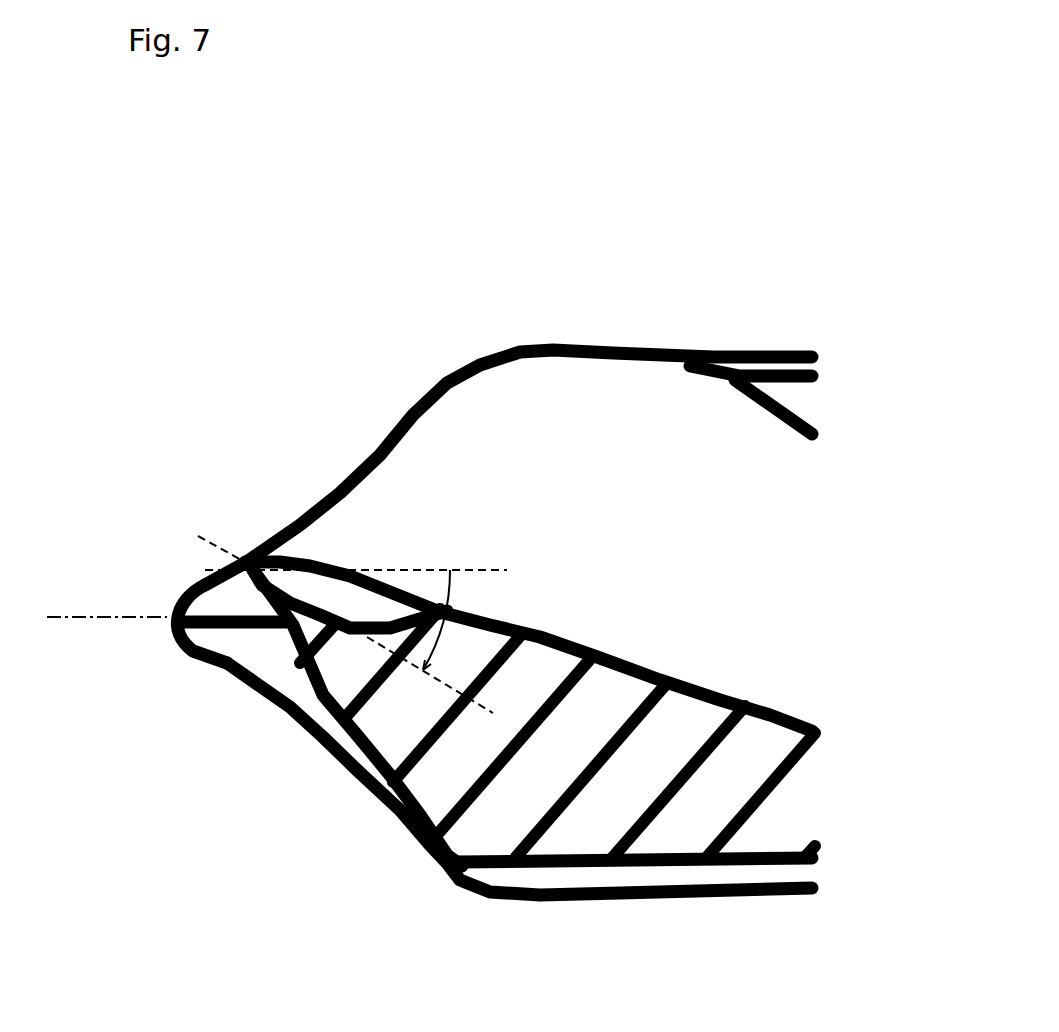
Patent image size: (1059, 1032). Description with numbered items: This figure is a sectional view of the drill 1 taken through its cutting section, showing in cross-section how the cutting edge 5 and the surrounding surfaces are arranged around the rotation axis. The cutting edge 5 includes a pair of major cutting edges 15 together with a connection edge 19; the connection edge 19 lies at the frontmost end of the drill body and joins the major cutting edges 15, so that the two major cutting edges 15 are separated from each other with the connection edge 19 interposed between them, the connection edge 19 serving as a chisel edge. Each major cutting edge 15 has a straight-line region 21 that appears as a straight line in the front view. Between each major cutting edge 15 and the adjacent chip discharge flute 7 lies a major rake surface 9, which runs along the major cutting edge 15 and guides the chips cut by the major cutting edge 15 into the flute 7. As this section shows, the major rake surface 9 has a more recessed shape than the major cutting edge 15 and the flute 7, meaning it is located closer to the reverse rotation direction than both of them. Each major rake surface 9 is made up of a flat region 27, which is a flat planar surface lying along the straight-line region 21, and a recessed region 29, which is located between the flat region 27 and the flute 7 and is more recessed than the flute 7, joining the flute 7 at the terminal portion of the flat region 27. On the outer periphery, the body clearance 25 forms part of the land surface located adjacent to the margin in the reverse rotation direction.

The drill 1 is at (423, 555).
The cutting edge 5 is at (161, 594).
The connection edge 19 is at (183, 590).
The chip discharge flute 7 is at (594, 487).
The major rake surface 9 is at (528, 509).
The flat region 27 is at (528, 509).
The recessed region 29 is at (387, 630).
The major cutting edge 15 is at (229, 496).
The straight-line region 21 is at (247, 556).
The body clearance 25 is at (577, 870).